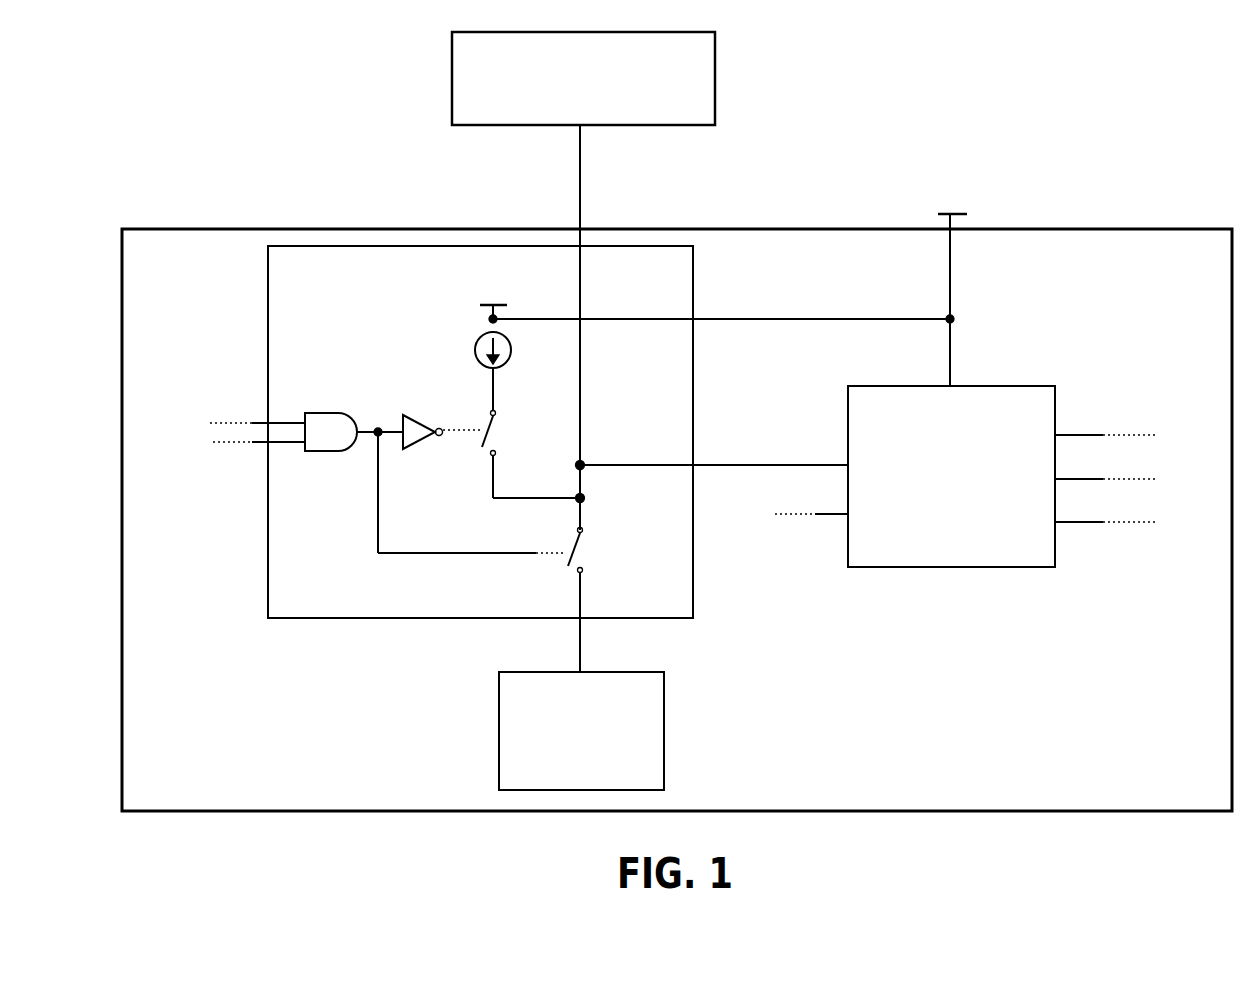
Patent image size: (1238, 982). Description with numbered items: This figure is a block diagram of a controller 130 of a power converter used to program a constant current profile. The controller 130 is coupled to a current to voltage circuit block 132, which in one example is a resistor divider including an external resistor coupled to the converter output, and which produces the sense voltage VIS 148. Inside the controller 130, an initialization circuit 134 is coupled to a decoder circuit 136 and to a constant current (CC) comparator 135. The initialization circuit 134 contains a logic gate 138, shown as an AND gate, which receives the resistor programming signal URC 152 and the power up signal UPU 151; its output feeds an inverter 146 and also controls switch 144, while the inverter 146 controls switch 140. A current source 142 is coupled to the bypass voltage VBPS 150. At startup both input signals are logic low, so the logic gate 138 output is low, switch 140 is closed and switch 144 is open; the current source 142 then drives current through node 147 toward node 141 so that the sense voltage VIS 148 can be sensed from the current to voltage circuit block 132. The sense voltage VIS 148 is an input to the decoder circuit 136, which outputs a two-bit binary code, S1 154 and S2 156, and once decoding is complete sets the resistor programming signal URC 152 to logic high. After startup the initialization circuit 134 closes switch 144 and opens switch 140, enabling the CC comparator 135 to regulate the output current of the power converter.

The controller 130 is at (197, 227).
The current to voltage circuit block 132 is at (451, 92).
The initialization circuit 134 is at (267, 582).
The constant current (CC) comparator 135 is at (498, 754).
The decoder circuit 136 is at (952, 574).
The logic gate 138 is at (330, 455).
The switch 140 is at (513, 438).
The node 141 is at (585, 463).
The current source 142 is at (472, 345).
The switch 144 is at (590, 571).
The inverter 146 is at (418, 451).
The node 147 is at (586, 498).
The sense voltage VIS 148 is at (626, 187).
The bypass voltage VBPS 150 is at (917, 199).
The power up signal UPU 151 is at (195, 457).
The resistor programming signal URC 152 is at (185, 408).
The S1 154 is at (1118, 469).
The S2 156 is at (1108, 511).